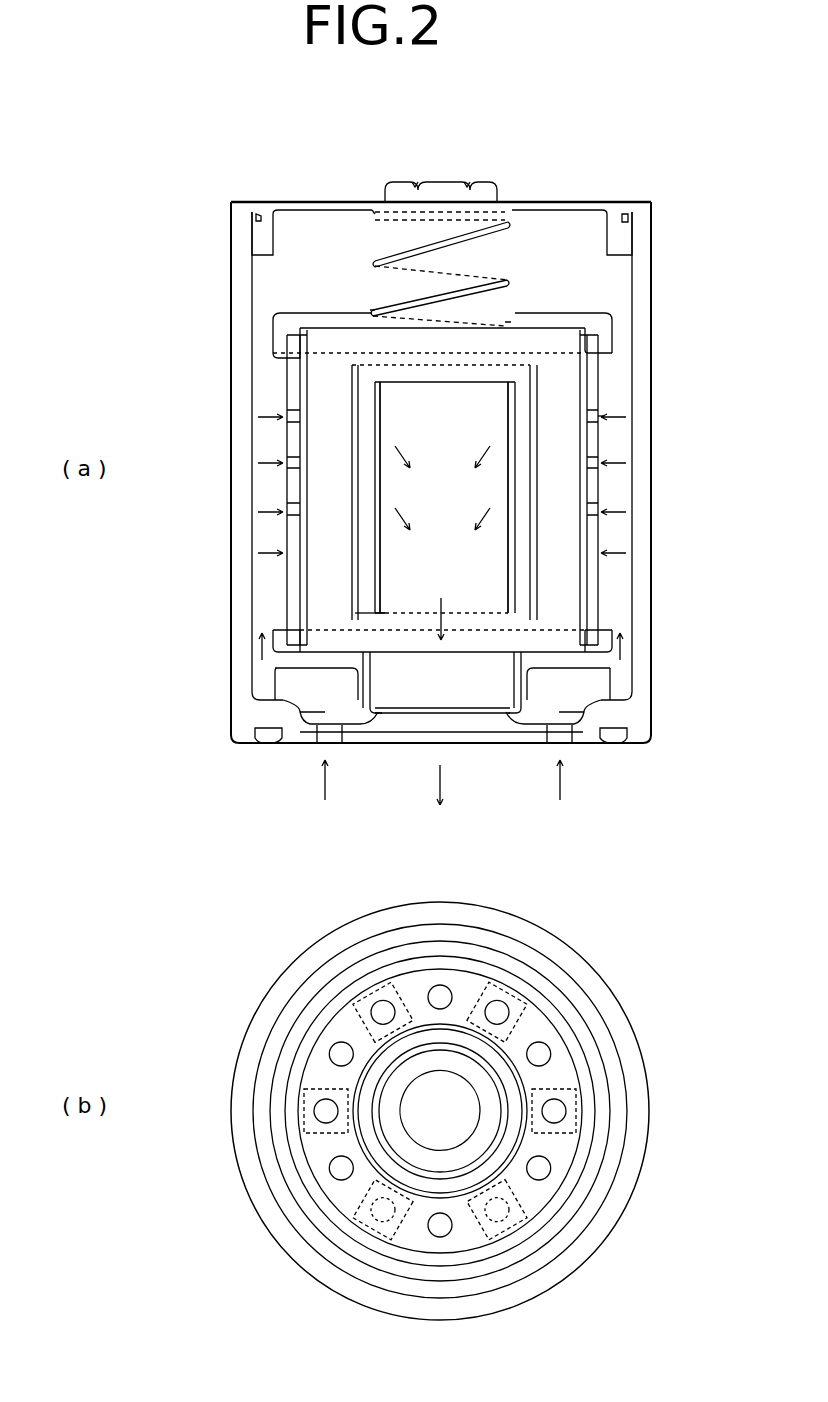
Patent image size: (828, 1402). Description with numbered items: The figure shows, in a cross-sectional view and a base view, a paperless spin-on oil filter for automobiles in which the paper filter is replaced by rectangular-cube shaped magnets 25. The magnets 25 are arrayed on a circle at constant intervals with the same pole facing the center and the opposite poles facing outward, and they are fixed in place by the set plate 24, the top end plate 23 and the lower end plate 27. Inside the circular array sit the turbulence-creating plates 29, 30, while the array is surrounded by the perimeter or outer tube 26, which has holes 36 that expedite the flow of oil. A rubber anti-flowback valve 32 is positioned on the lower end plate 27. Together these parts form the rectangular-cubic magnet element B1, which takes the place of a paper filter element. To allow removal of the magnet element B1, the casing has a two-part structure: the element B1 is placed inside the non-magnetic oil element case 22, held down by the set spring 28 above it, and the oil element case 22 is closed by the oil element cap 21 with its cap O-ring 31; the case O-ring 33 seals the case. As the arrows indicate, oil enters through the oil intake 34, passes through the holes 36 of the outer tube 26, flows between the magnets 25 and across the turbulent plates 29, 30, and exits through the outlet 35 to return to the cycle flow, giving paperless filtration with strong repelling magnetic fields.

The oil element cap 21 is at (305, 202).
The oil element case 22 is at (231, 440).
The top end plate 23 is at (612, 322).
The set plate 24 is at (572, 346).
The rectangular-cube shaped magnets 25 is at (560, 396).
The perimeter (outer tube) 26 is at (598, 446).
The lower end plate 27 is at (558, 632).
The set spring 28 is at (440, 242).
The turbulence-creating plate 29 is at (537, 502).
The turbulence-creating plate 30 is at (515, 536).
The cap O-ring 31 is at (628, 218).
The rubber anti-flowback valve 32 is at (540, 716).
The case O-ring 33 is at (268, 743).
The oil intake 34 is at (560, 743).
The outlet 35 is at (425, 722).
The holes 36 is at (600, 412).
The rectangular-cubic magnet element B1 is at (287, 378).